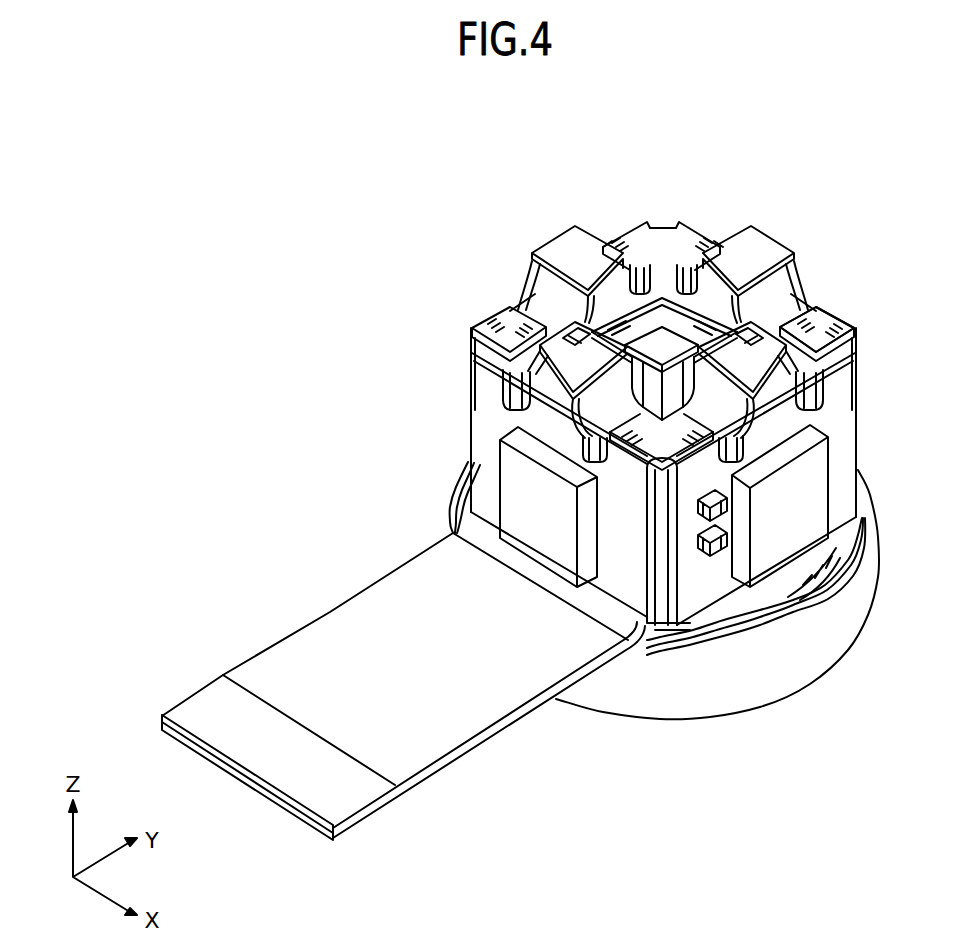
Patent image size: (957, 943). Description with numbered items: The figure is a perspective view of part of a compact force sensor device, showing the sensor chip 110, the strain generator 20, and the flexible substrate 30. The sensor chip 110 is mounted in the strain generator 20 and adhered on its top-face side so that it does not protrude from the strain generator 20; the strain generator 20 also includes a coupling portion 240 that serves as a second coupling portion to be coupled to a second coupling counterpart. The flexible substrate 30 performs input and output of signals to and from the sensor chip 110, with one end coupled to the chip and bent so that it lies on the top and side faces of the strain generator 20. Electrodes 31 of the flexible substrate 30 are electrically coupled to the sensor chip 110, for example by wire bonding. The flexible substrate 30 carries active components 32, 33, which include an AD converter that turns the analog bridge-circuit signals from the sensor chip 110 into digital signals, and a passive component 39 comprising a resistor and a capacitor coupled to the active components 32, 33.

The strain generator 20 is at (697, 647).
The coupling portion 240 is at (840, 630).
The flexible substrate 30 is at (378, 634).
The electrodes 31 is at (820, 323).
The active component 32 is at (543, 511).
The active component 33 is at (793, 497).
The passive component 39 is at (717, 548).
The sensor chip 110 is at (661, 309).